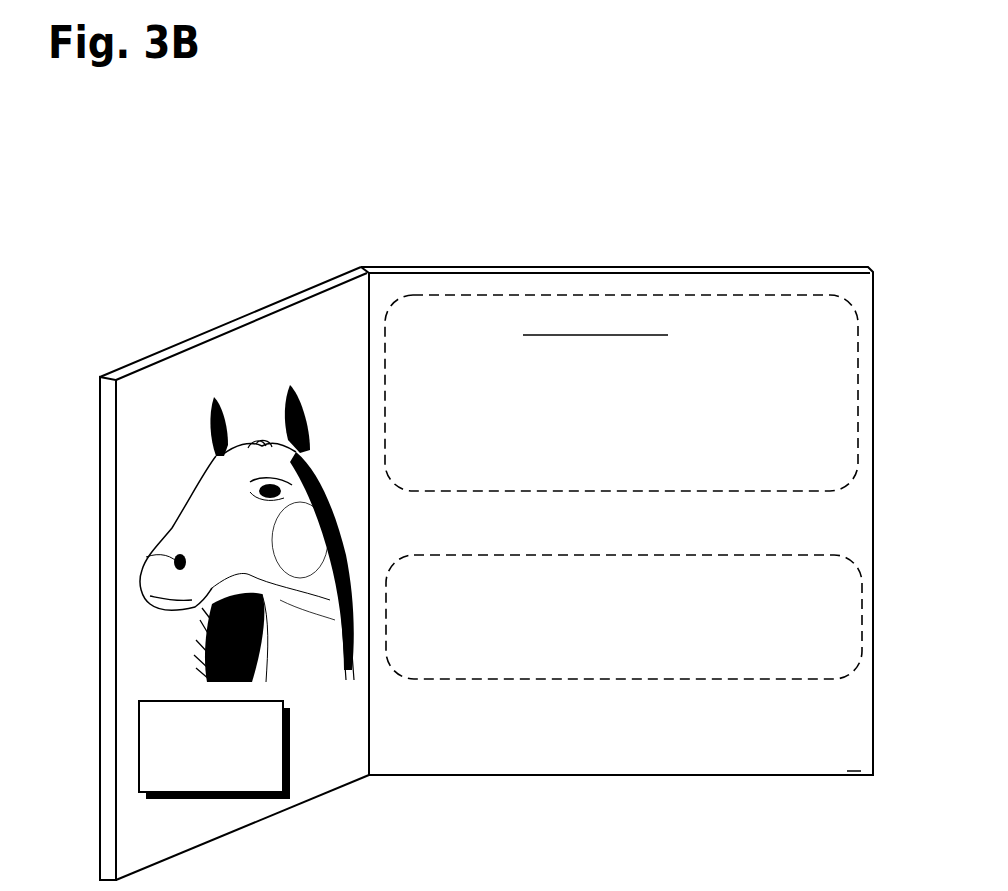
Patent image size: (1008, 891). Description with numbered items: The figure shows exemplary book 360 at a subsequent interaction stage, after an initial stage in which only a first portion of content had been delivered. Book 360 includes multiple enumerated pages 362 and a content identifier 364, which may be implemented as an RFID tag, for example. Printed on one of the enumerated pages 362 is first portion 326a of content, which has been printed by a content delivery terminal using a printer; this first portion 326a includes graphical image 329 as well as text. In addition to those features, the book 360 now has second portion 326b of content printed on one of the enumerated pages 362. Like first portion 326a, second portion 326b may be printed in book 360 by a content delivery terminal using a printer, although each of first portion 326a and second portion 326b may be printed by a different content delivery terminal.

The book 360 is at (790, 210).
The enumerated pages 362 is at (604, 752).
The first portion of content 326a is at (613, 493).
The second portion of content 326b is at (703, 681).
The content identifier 364 is at (291, 749).
The graphical image 329 is at (198, 454).